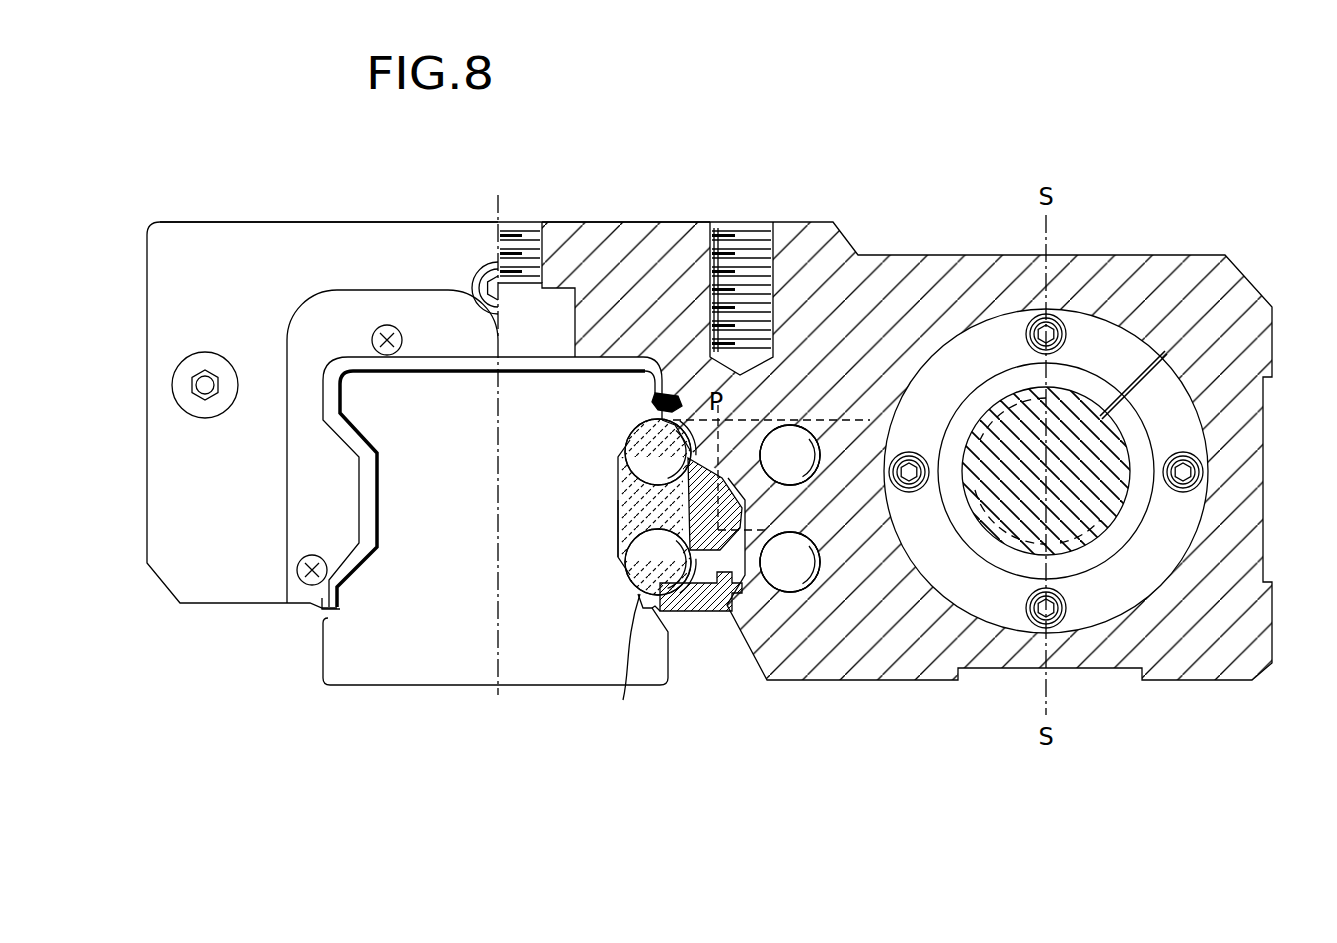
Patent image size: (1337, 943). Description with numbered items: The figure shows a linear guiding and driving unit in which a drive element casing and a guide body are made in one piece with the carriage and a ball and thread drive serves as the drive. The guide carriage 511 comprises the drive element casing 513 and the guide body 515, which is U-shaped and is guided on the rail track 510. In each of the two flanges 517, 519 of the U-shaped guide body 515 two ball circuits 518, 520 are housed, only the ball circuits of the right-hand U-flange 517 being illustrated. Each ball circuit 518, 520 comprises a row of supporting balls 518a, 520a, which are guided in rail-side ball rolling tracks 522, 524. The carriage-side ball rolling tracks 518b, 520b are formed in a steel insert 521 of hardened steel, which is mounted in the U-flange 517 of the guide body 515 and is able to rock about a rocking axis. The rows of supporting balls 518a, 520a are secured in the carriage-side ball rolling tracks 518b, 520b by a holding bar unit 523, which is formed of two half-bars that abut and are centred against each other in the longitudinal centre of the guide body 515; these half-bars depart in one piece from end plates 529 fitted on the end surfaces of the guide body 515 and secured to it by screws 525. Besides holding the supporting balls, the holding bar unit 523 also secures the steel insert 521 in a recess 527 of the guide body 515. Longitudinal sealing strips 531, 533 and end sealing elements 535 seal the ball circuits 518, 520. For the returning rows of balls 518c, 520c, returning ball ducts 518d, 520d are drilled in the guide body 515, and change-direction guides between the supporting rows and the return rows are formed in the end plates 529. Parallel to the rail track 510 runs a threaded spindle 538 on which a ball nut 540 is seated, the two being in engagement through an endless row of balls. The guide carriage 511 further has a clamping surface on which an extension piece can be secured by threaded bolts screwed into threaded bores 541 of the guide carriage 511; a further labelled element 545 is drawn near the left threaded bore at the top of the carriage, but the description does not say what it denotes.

The rail track 510 is at (537, 668).
The guide carriage 511 is at (938, 252).
The drive element casing 513 is at (1190, 272).
The guide body 515 is at (663, 222).
The U-flange 517 is at (742, 612).
The ball circuit 518 is at (799, 418).
The row of supporting balls 518a is at (630, 433).
The carriage-side ball rolling track 518b is at (672, 490).
The returning row of balls 518c is at (822, 443).
The returning ball duct 518d is at (823, 452).
The U-flange 519 is at (152, 545).
The ball circuit 520 is at (803, 593).
The row of supporting balls 520a is at (643, 563).
The carriage-side ball rolling track 520b is at (672, 514).
The returning row of balls 520c is at (803, 593).
The returning ball duct 520d is at (823, 568).
The steel insert 521 is at (706, 448).
The ball rolling track 522 is at (628, 446).
The holding bar unit 523 is at (622, 526).
The ball rolling track 524 is at (496, 548).
The screw 525 is at (205, 368).
The recess 527 is at (740, 511).
The end plate 529 is at (330, 225).
The longitudinal sealing strip 531 is at (700, 608).
The longitudinal sealing strip 533 is at (655, 394).
The end sealing element 535 is at (322, 600).
The threaded spindle 538 is at (1066, 540).
The ball nut 540 is at (1205, 441).
The threaded bore 541 is at (522, 232).
The set screw 545 is at (550, 252).